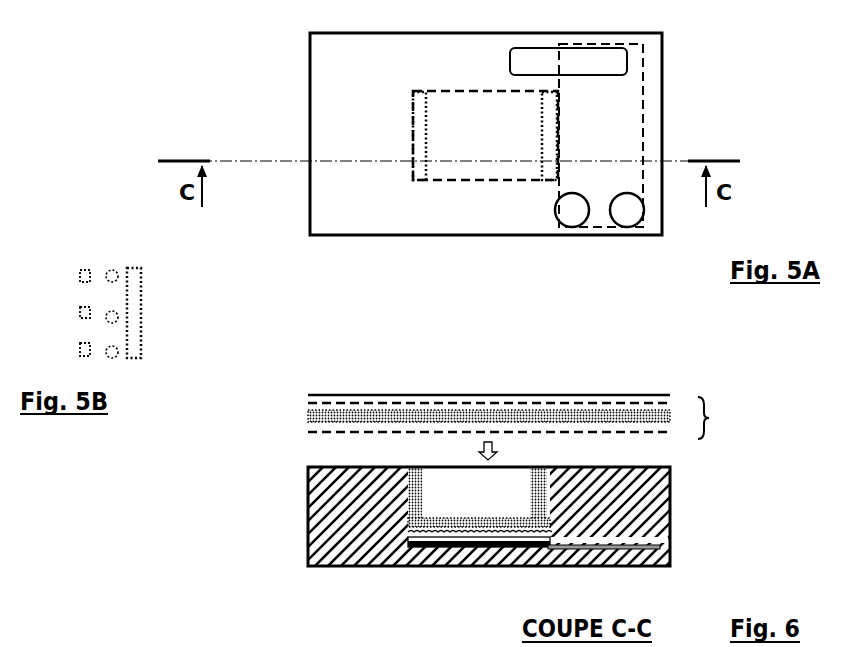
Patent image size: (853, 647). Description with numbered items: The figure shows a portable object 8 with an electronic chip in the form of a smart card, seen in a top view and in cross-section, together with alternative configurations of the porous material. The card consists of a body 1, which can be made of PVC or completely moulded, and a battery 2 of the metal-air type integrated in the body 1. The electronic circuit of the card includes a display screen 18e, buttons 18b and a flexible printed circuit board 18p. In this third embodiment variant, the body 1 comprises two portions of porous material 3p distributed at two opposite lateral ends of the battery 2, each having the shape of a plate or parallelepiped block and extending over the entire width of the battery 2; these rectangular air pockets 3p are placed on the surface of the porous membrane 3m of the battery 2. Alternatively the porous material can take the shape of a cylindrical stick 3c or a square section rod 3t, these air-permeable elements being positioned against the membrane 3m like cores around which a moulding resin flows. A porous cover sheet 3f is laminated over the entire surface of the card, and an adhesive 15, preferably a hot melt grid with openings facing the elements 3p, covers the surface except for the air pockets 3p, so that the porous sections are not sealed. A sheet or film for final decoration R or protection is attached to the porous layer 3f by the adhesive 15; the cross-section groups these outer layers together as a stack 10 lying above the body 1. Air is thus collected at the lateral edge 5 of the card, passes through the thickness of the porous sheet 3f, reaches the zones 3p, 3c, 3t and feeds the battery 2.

In FIG. 5A, the portable object 8 is at (203, 61).
In FIG. 5A, the lateral edge 5 is at (303, 135).
In FIG. 5A, the flexible printed circuit board 18p is at (648, 133).
In FIG. 6, the flexible printed circuit board 18p is at (672, 547).
In FIG. 5A, the display screen 18e is at (632, 60).
In FIG. 5A, the battery 2 is at (470, 186).
In FIG. 6, the battery 2 is at (483, 550).
In FIG. 5A, the porous material portions 3p is at (414, 186).
In FIG. 5B, the porous material portions 3p is at (146, 305).
In FIG. 6, the porous material portions 3p is at (545, 455).
In FIG. 5A, the buttons 18b is at (606, 214).
In FIG. 5B, the cylindrical stick 3c is at (113, 263).
In FIG. 5B, the square section rod 3t is at (77, 350).
In FIG. 6, the multilayer stack 10 is at (470, 416).
In FIG. 6, the adhesive 15 is at (672, 402).
In FIG. 6, the porous cover sheet 3f is at (303, 418).
In FIG. 6, the final decoration sheet R is at (562, 387).
In FIG. 6, the body 1 is at (672, 485).
In FIG. 6, the membrane 3m is at (438, 530).